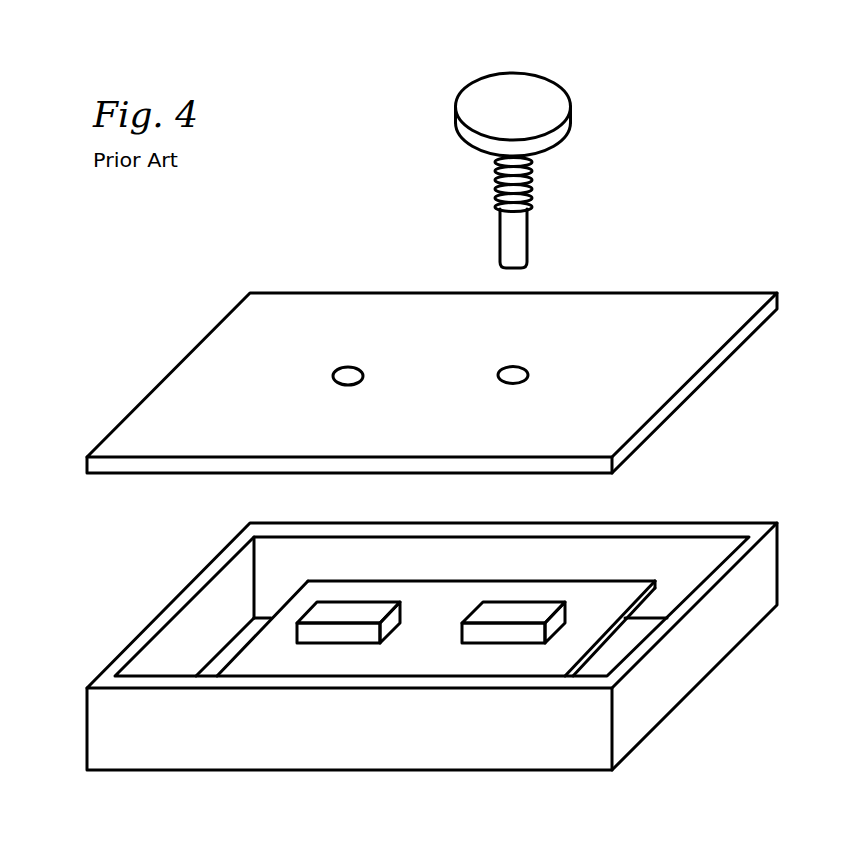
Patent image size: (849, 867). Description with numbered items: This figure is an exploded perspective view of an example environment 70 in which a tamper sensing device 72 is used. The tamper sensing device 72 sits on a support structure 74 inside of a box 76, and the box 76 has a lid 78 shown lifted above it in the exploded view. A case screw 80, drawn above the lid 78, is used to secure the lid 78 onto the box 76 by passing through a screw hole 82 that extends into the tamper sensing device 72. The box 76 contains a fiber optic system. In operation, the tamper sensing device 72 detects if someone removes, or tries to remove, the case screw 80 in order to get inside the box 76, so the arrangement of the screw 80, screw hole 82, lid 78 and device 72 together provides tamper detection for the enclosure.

The example environment 70 is at (740, 166).
The tamper sensing device 72 is at (547, 602).
The support structure 74 is at (273, 662).
The box 76 is at (757, 593).
The lid 78 is at (690, 303).
The case screw 80 is at (563, 80).
The screw hole 82 is at (525, 367).